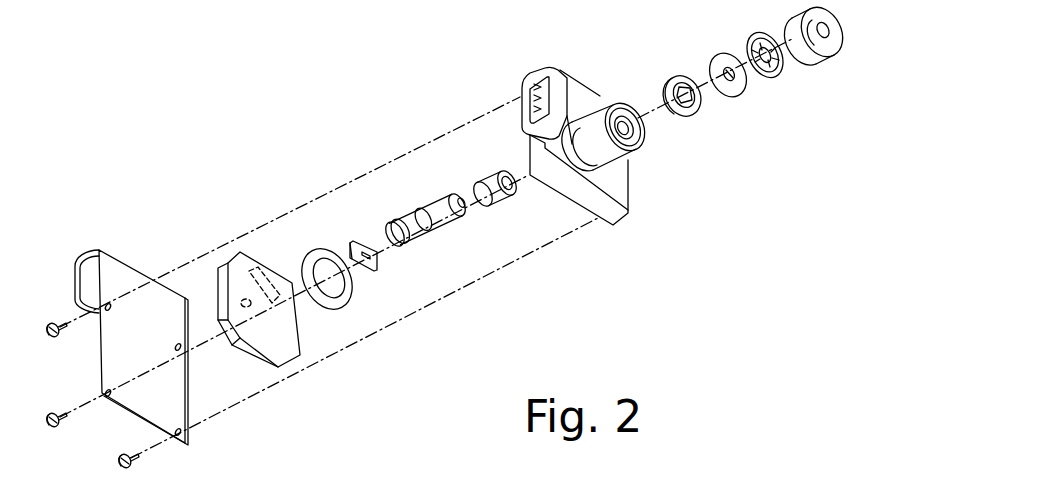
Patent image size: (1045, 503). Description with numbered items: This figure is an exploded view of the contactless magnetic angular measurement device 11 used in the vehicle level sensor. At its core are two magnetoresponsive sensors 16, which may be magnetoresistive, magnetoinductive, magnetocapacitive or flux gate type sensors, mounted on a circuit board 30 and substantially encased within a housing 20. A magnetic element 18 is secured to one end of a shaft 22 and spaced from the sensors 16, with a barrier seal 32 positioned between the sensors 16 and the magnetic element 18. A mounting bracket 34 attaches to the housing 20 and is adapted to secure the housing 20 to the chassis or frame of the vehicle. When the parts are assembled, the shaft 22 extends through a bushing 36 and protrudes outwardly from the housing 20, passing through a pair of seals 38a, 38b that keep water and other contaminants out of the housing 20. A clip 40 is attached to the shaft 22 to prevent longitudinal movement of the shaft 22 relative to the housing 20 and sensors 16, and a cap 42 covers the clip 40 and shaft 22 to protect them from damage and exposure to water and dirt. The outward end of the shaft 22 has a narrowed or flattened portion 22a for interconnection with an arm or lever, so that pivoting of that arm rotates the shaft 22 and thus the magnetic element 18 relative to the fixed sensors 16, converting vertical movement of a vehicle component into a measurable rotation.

The magnetic angular measurement device 11 is at (315, 94).
The magnetoresponsive sensors 16 is at (258, 308).
The magnetic element 18 is at (372, 273).
The housing 20 is at (600, 169).
The shaft 22 is at (437, 238).
The narrowed or flattened portion 22a is at (460, 220).
The circuit board 30 is at (300, 357).
The barrier seal 32 is at (350, 293).
The mounting bracket 34 is at (172, 382).
The bushing 36 is at (500, 203).
The seal 38a is at (690, 117).
The seal 38b is at (740, 100).
The clip 40 is at (782, 77).
The cap 42 is at (815, 63).